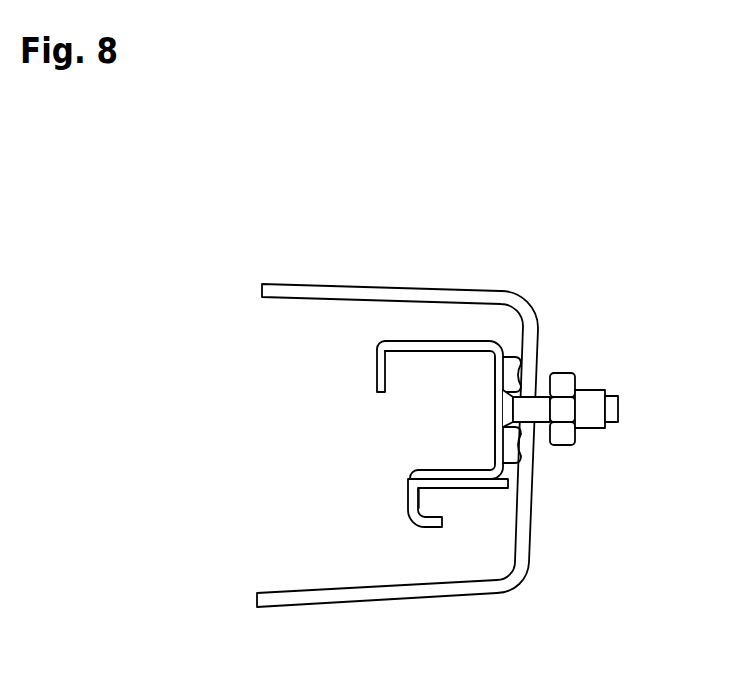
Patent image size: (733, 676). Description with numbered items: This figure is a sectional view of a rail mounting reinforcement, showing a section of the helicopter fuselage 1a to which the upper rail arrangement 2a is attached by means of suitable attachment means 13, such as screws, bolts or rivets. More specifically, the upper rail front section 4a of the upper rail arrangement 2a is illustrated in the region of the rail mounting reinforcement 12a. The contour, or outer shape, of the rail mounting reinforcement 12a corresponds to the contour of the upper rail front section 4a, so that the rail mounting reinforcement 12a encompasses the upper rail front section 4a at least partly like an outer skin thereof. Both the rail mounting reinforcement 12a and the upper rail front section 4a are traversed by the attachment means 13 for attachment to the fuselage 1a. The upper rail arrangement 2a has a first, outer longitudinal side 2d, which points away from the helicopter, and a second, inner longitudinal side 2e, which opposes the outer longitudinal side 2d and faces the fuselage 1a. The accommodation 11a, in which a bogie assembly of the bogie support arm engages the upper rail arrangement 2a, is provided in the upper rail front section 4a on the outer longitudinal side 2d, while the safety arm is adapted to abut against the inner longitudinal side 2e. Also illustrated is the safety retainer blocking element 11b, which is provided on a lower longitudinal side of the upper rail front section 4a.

The fuselage 1a is at (311, 292).
The upper rail arrangement 2a is at (497, 331).
The upper rail front section 4a is at (377, 358).
The accommodation 11a is at (418, 376).
The safety retainer blocking element 11b is at (444, 504).
The outer longitudinal side 2d is at (480, 432).
The inner longitudinal side 2e is at (489, 503).
The rail mounting reinforcement 12a is at (517, 442).
The attachment means 13 is at (588, 402).